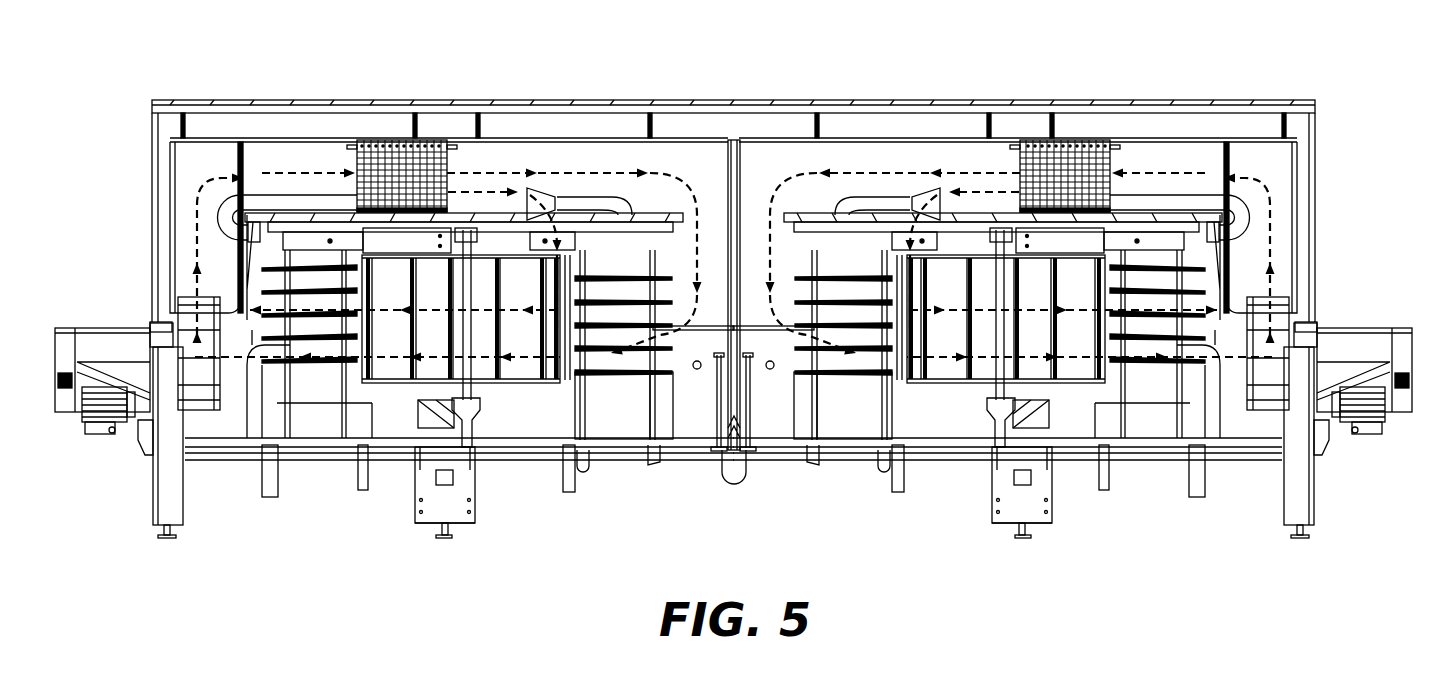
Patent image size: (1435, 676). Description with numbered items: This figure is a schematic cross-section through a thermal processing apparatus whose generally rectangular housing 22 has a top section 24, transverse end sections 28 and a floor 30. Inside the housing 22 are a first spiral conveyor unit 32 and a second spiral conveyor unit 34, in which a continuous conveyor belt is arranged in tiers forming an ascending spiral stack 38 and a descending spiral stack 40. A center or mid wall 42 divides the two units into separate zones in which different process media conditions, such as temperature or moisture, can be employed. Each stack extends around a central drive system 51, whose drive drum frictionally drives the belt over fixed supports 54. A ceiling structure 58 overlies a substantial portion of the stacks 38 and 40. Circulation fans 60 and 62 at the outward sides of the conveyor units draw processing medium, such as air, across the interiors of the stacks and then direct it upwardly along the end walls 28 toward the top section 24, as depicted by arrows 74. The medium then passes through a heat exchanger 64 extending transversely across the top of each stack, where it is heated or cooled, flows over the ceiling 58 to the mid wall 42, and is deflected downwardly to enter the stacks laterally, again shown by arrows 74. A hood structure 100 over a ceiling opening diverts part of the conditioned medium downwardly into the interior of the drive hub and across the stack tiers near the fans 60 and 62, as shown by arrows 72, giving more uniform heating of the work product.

The housing 22 is at (733, 303).
The top section 24 is at (445, 100).
The transverse end sections 28 is at (152, 280).
The floor 30 is at (687, 443).
The first spiral conveyor unit 32 is at (238, 257).
The second spiral conveyor unit 34 is at (1230, 257).
The ascending spiral stack 38 is at (615, 372).
The descending spiral stack 40 is at (852, 372).
The mid wall 42 is at (733, 165).
The central drive system 51 is at (492, 478).
The supports 54 is at (318, 365).
The ceiling structure 58 is at (640, 213).
The circulation fan 60 is at (1265, 405).
The circulation fan 62 is at (205, 405).
The heat exchanger 64 is at (1088, 145).
The arrows 72 is at (488, 190).
The arrows 74 is at (205, 193).
The hood structure 100 is at (553, 190).